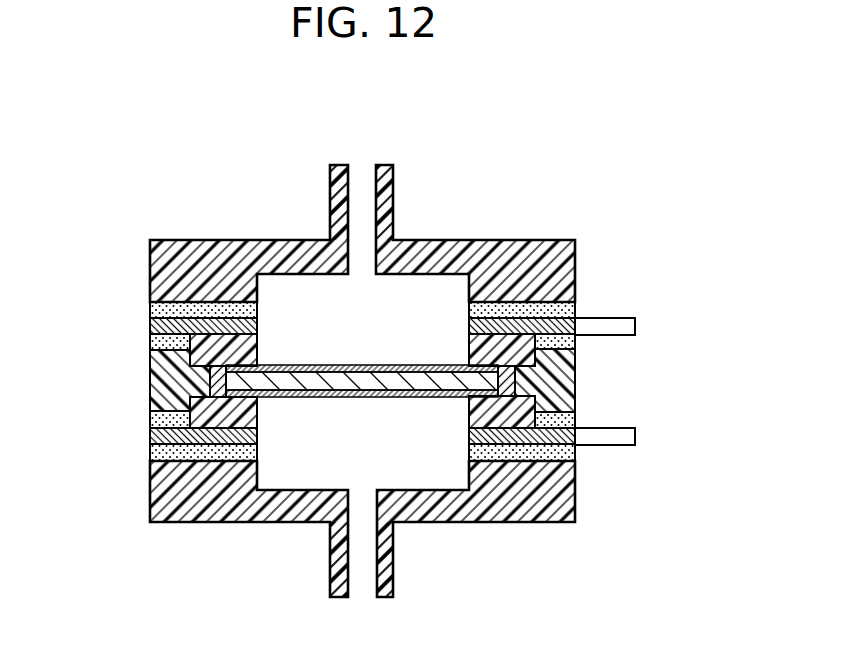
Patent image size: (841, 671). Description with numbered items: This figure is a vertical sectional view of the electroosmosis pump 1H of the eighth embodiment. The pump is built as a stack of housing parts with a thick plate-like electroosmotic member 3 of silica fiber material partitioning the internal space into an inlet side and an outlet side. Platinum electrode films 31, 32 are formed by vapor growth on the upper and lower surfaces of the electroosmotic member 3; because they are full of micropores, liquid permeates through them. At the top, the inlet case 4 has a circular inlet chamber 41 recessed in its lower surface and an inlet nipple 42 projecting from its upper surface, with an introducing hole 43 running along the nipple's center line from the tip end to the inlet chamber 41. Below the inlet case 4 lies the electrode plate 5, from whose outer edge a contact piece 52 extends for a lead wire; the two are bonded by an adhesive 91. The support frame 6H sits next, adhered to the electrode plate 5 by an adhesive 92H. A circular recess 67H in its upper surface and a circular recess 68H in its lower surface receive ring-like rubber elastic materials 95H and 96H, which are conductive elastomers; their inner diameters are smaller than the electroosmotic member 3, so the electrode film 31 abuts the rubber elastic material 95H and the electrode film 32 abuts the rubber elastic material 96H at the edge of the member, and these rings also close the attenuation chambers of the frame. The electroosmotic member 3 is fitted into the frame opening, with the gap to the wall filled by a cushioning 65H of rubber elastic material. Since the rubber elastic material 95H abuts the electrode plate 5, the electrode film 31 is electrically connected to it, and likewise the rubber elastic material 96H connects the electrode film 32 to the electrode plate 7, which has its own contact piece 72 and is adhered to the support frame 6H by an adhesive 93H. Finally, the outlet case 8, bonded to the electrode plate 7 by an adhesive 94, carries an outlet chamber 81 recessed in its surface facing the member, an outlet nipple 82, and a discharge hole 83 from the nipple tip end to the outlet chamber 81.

The electroosmosis pump 1H is at (566, 163).
The electroosmotic member 3 is at (357, 380).
The electrode film 31 is at (305, 365).
The electrode film 32 is at (288, 400).
The inlet case 4 is at (577, 262).
The inlet chamber 41 is at (443, 297).
The inlet nipple 42 is at (387, 185).
The introducing hole 43 is at (362, 175).
The electrode plate 5 is at (577, 322).
The contact piece 52 is at (635, 328).
The support frame 6H is at (577, 380).
The cushioning 65H is at (152, 377).
The circular recess 67H is at (442, 350).
The circular recess 68H is at (297, 412).
The electrode plate 7 is at (513, 438).
The contact piece 72 is at (635, 437).
The outlet case 8 is at (577, 498).
The outlet chamber 81 is at (440, 477).
The outlet nipple 82 is at (395, 572).
The discharge hole 83 is at (363, 578).
The adhesive 91 is at (152, 310).
The adhesive 92H is at (152, 337).
The adhesive 93H is at (152, 420).
The adhesive 94 is at (185, 450).
The rubber elastic material 95H is at (220, 345).
The rubber elastic material 96H is at (172, 400).